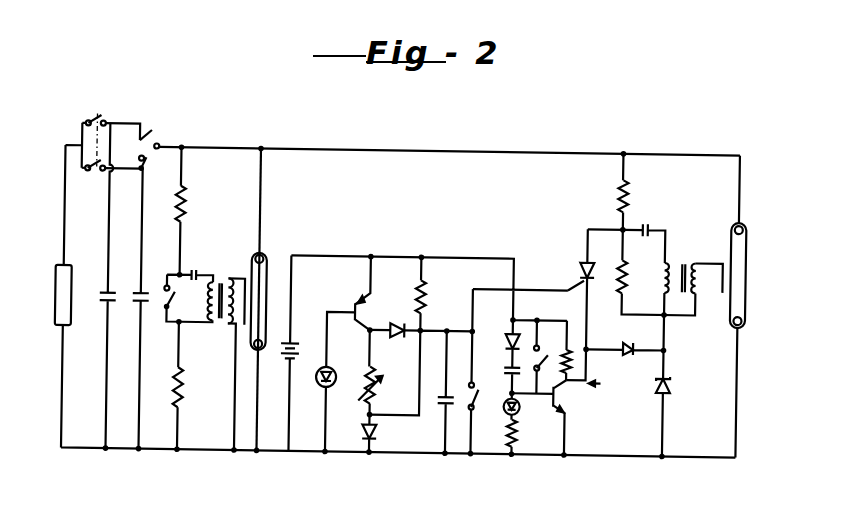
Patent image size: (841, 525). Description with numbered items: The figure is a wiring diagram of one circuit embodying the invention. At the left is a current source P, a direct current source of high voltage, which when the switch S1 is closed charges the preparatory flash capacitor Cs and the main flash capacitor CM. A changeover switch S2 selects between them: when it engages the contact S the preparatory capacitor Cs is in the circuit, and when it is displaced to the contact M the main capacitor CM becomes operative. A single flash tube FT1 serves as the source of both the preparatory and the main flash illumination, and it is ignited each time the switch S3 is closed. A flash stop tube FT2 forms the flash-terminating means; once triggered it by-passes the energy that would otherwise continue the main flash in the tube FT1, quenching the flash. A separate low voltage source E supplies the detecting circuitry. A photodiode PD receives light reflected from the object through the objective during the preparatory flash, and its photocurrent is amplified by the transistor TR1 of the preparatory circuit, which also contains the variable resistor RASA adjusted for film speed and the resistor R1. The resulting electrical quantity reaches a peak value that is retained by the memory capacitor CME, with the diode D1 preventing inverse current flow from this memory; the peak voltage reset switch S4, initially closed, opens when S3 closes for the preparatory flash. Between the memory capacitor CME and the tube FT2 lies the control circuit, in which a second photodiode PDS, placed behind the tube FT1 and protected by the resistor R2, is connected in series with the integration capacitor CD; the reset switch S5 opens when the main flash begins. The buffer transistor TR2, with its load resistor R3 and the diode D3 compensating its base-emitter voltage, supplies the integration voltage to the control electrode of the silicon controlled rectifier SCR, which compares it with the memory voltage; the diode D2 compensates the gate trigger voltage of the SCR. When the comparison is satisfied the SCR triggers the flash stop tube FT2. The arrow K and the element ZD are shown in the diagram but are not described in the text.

The switch S1 is at (112, 137).
The contact S is at (148, 126).
The changeover switch S2 is at (169, 137).
The contact M is at (151, 167).
The current source P is at (63, 295).
The preparatory flash capacitor Cs is at (104, 300).
The main flash capacitor CM is at (138, 300).
The switch S3 is at (188, 296).
The flash tube FT1 is at (266, 254).
The low voltage direct current source E is at (295, 353).
The transistor TR1 is at (361, 298).
The photodiode PD is at (325, 383).
The diode D1 is at (403, 333).
The resistor R1 is at (427, 297).
The variable resistor RASA is at (384, 372).
The diode D2 is at (381, 433).
The memory capacitor CME is at (446, 400).
The peak voltage reset switch S4 is at (481, 371).
The diode D3 is at (511, 343).
The integration capacitor CD is at (508, 364).
The photodiode PDS is at (524, 407).
The resistor R2 is at (524, 437).
The integration wave form generating reset switch S5 is at (547, 357).
The load resistor R3 is at (575, 341).
The buffer transistor TR2 is at (563, 388).
The quench signal input K is at (603, 389).
The silicon controlled rectifier SCR is at (582, 266).
The flash stop tube FT2 is at (733, 228).
The zener diode ZD is at (673, 378).